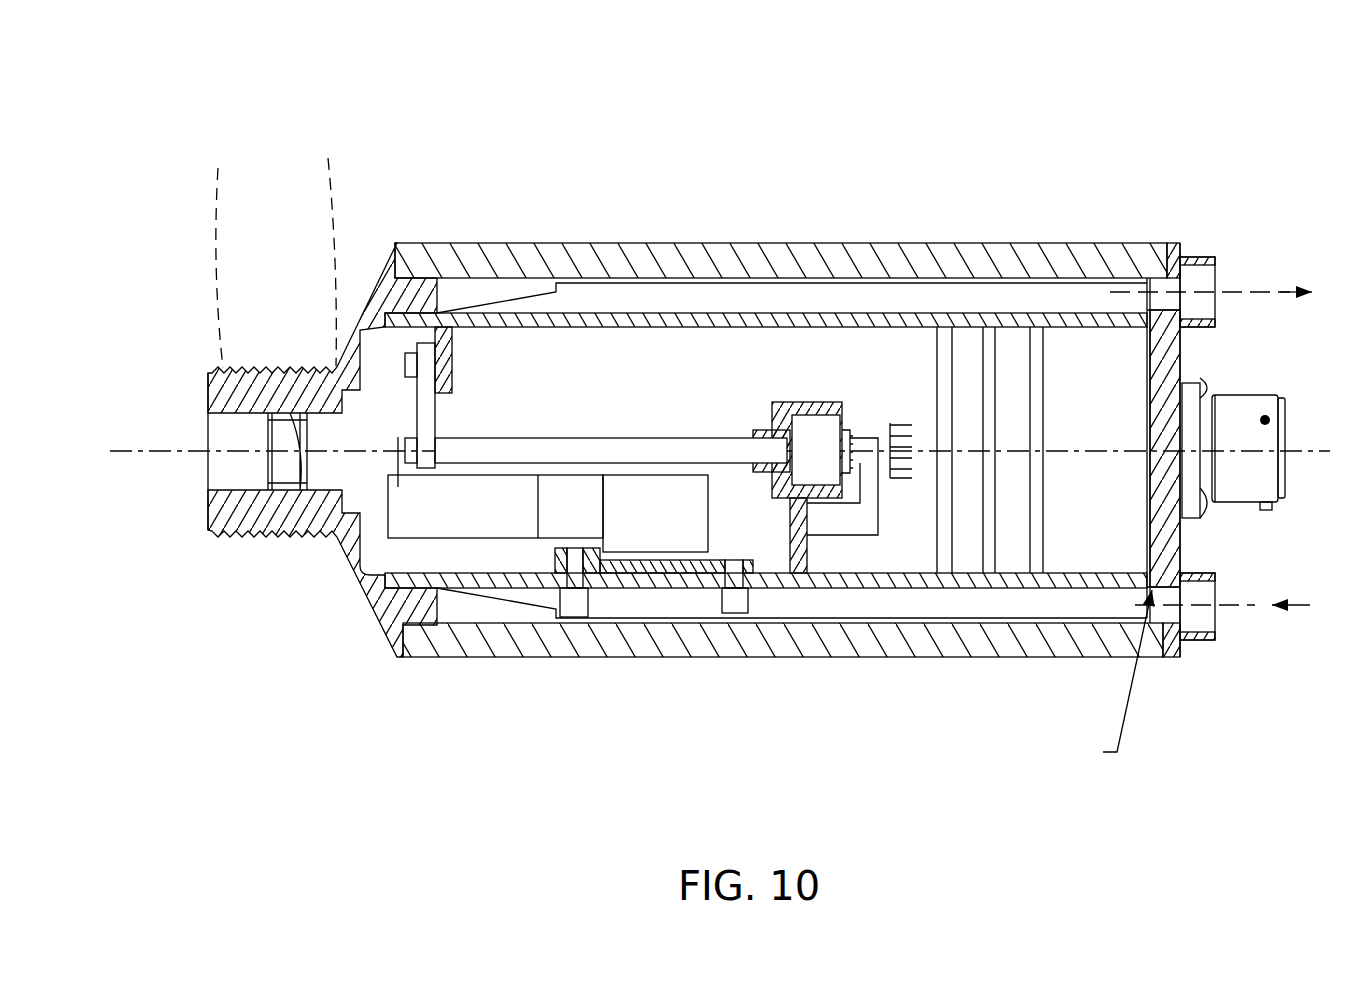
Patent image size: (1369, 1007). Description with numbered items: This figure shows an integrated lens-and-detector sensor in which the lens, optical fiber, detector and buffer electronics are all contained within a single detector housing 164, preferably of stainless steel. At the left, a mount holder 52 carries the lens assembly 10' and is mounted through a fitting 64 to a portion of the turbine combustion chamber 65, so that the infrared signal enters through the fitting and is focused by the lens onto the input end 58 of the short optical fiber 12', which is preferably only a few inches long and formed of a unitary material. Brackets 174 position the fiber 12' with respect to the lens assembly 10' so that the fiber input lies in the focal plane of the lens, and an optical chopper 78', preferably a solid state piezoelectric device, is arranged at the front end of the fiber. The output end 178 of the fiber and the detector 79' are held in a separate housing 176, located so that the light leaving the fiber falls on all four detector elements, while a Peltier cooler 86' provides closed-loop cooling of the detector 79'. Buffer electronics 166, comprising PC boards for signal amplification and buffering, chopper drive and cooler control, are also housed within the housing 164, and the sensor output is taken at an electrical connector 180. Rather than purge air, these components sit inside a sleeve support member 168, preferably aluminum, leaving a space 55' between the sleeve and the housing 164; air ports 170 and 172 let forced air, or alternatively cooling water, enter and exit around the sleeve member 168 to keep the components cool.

The lens assembly 10' is at (720, 537).
The optical fiber 12' is at (596, 281).
The mount holder 52 is at (260, 370).
The space 55' is at (787, 398).
The input end of the optical fiber 58 is at (400, 430).
The fitting 64 is at (297, 540).
The portion of the turbine combustion chamber 65 is at (283, 260).
The optical chopper 78' is at (570, 627).
The detector 79' is at (821, 417).
The Peltier cooler 86' is at (818, 591).
The detector housing 164 is at (473, 240).
The buffer electronics 166 is at (950, 400).
The sleeve support member 168 is at (470, 590).
The air port 170 is at (1202, 620).
The air port 172 is at (1195, 302).
The brackets 174 is at (448, 355).
The separate housing 176 is at (787, 402).
The output end of the fiber 178 is at (757, 432).
The electrical connector 180 is at (1283, 462).